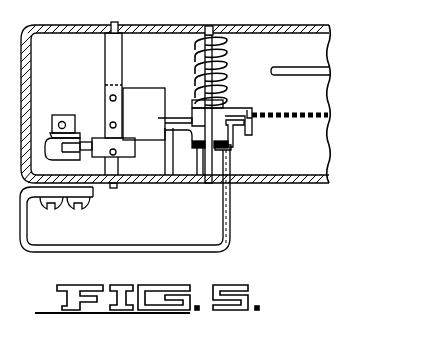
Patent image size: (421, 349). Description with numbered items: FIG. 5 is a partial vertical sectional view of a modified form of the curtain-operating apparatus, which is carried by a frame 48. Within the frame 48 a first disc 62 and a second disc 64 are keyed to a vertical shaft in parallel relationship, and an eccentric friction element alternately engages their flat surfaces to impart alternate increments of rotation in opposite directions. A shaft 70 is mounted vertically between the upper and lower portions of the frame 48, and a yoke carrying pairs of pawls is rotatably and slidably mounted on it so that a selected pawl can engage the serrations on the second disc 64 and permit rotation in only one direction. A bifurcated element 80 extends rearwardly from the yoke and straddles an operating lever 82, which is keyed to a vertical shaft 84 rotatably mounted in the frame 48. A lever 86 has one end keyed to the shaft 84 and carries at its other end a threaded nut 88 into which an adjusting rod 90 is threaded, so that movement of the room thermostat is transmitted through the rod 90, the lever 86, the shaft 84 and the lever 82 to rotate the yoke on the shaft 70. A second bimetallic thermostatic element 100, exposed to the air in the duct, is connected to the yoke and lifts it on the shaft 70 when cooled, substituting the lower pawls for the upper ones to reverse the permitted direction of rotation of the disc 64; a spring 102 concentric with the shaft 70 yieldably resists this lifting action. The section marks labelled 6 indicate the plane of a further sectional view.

The frame 48 is at (165, 25).
The vertical shaft 84 is at (123, 49).
The section line 6- 6 is at (186, 74).
The threaded nut 88 is at (78, 108).
The adjusting rod 90 is at (53, 116).
The lever 86 is at (40, 150).
The operating lever 82 is at (144, 114).
The bifurcated element 80 is at (160, 121).
The shaft 70 is at (226, 62).
The spring 102 is at (228, 83).
The first disc 62 is at (285, 68).
The second disc 64 is at (284, 113).
The second bimetallic thermostatic element 100 is at (112, 250).